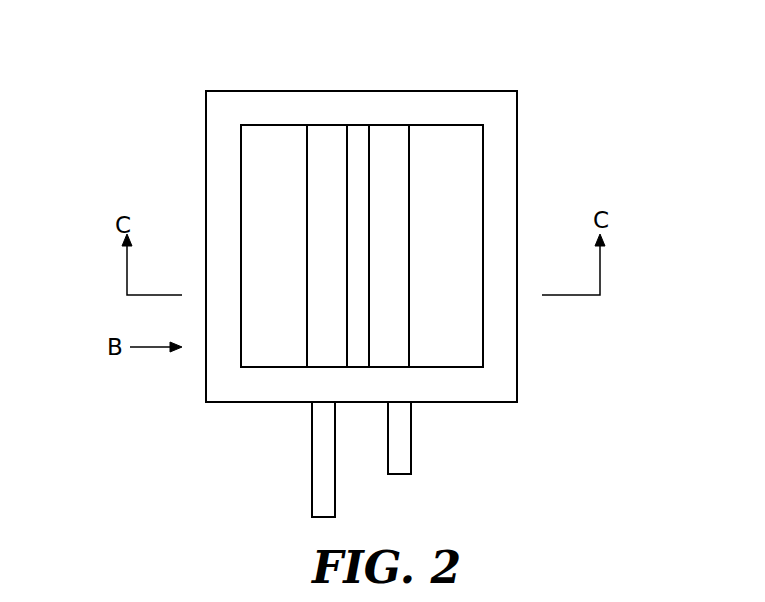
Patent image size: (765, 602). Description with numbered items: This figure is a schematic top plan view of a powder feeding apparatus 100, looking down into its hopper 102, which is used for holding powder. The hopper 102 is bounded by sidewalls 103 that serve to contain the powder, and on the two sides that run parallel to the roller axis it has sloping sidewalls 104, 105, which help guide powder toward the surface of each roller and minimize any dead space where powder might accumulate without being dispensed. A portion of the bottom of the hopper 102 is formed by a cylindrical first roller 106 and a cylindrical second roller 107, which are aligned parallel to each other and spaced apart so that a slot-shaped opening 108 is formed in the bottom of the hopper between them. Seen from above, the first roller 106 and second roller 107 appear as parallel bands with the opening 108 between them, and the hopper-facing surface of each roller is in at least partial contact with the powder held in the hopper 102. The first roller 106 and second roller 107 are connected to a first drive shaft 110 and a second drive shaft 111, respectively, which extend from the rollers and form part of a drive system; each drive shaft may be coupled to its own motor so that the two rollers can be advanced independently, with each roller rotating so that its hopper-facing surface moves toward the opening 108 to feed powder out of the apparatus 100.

The powder feeding apparatus 100 is at (337, 72).
The hopper 102 is at (517, 125).
The sidewalls 103 is at (442, 125).
The sloping sidewall 104 is at (275, 152).
The sloping sidewall 105 is at (452, 188).
The first roller 106 is at (322, 330).
The second roller 107 is at (393, 324).
The opening 108 is at (360, 218).
The first drive shaft 110 is at (312, 482).
The second drive shaft 111 is at (411, 455).